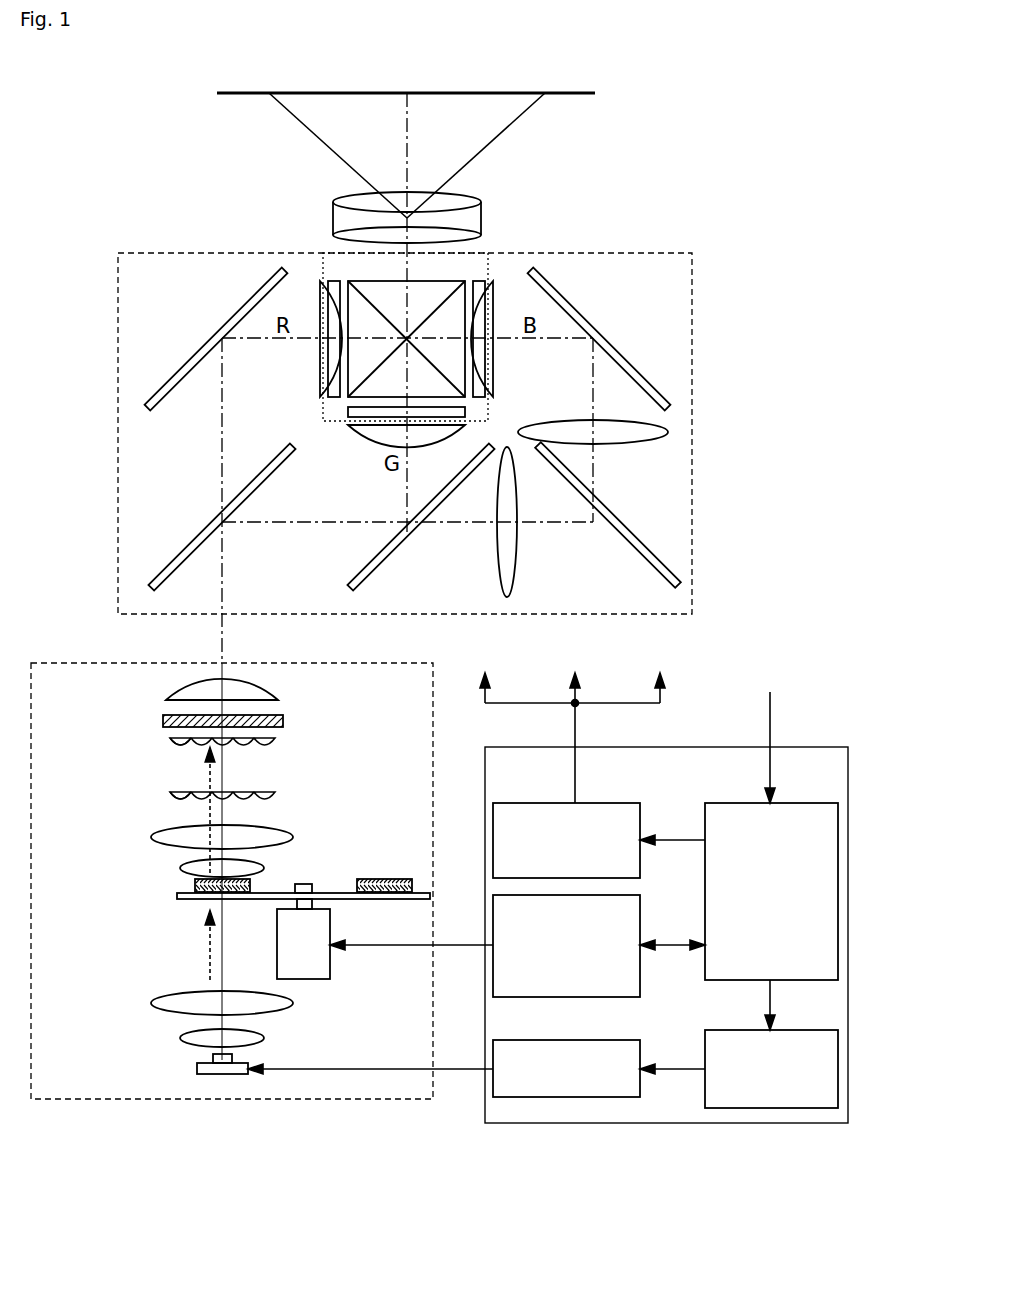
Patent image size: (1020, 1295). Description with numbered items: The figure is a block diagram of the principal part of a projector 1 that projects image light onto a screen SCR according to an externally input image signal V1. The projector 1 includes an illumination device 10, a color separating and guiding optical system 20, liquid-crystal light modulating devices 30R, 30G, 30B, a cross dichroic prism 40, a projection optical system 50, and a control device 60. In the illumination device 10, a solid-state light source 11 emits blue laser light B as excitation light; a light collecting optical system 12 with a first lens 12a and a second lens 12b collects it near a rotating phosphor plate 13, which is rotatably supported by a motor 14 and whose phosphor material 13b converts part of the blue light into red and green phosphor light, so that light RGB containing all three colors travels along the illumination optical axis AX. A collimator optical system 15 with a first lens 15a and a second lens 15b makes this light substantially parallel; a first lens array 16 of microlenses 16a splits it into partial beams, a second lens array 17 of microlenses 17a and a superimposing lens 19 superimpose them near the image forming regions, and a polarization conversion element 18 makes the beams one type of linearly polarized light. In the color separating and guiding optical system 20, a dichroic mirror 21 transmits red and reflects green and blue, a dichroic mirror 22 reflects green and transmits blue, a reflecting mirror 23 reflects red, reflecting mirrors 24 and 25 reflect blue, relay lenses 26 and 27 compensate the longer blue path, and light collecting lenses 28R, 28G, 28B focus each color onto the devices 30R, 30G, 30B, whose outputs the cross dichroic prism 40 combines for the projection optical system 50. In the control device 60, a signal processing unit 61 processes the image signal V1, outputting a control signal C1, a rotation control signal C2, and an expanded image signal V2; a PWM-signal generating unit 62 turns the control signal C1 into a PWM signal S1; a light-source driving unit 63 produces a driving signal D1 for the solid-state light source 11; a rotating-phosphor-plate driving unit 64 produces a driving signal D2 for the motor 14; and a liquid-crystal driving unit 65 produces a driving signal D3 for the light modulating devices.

The projector 1 is at (704, 168).
The illumination device 10 is at (82, 1100).
The solid-state light source 11 is at (178, 1062).
The light collecting optical system 12 is at (276, 1021).
The first lens 12a is at (262, 1038).
The second lens 12b is at (278, 1000).
The rotating phosphor plate 13 is at (303, 857).
The phosphor material 13b is at (395, 878).
The motor 14 is at (330, 924).
The collimator optical system 15 is at (169, 853).
The first lens 15a is at (185, 870).
The second lens 15b is at (160, 840).
The first lens array 16 is at (270, 797).
The microlenses 16a is at (178, 799).
The second lens array 17 is at (270, 745).
The microlenses 17a is at (178, 745).
The polarization conversion element 18 is at (283, 721).
The superimposing lens 19 is at (268, 690).
The color separating and guiding optical system 20 is at (118, 487).
The dichroic mirror 21 is at (187, 552).
The dichroic mirror 22 is at (360, 573).
The reflecting mirror 23 is at (178, 373).
The reflecting mirror 24 is at (577, 545).
The reflecting mirror 25 is at (645, 382).
The relay lens 26 is at (504, 555).
The relay lens 27 is at (668, 432).
The light collecting lens 28R is at (300, 355).
The light collecting lens 28G is at (360, 432).
The light collecting lens 28B is at (510, 356).
The liquid-crystal light modulating device 30R is at (334, 281).
The liquid-crystal light modulating device 30G is at (352, 412).
The liquid-crystal light modulating device 30B is at (479, 281).
The cross dichroic prism 40 is at (415, 281).
The projection optical system 50 is at (482, 197).
The control device 60 is at (848, 746).
The signal processing unit 61 is at (800, 803).
The PWM-signal generating unit 62 is at (705, 1097).
The light-source driving unit 63 is at (530, 1040).
The rotating-phosphor-plate driving unit 64 is at (585, 997).
The liquid-crystal driving unit 65 is at (527, 803).
The screen SCR is at (578, 95).
The illumination optical axis AX is at (222, 650).
The RGB light RGB is at (185, 810).
The blue light B is at (201, 945).
The driving signal D1 is at (458, 1067).
The driving signal D2 is at (458, 944).
The driving signal D3 is at (574, 720).
The image signal V1 is at (770, 720).
The image signal V2 is at (674, 838).
The control signal C1 is at (770, 1000).
The rotation control signal C2 is at (672, 944).
The PWM signal S1 is at (672, 1067).